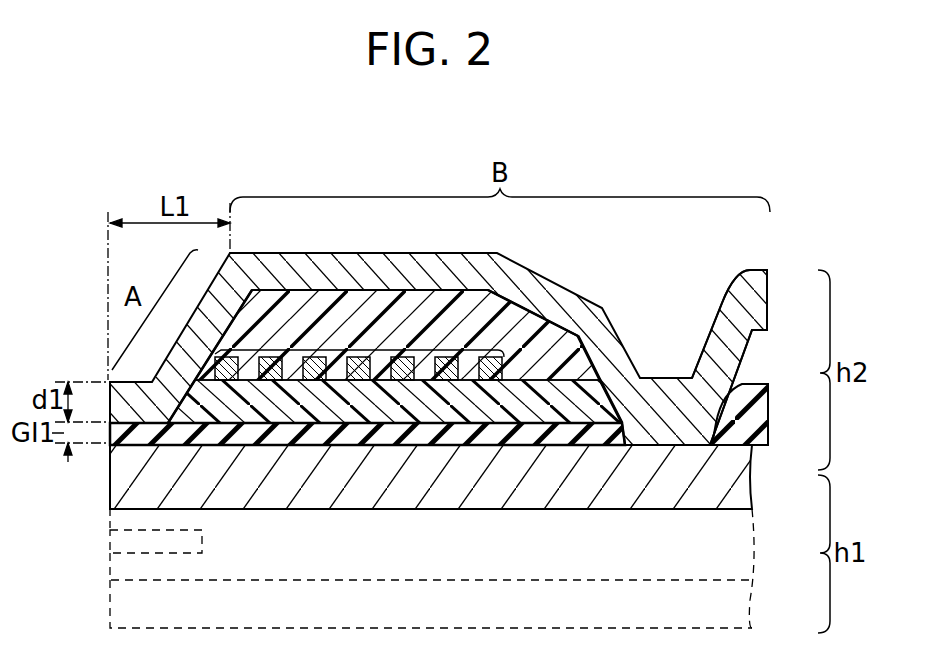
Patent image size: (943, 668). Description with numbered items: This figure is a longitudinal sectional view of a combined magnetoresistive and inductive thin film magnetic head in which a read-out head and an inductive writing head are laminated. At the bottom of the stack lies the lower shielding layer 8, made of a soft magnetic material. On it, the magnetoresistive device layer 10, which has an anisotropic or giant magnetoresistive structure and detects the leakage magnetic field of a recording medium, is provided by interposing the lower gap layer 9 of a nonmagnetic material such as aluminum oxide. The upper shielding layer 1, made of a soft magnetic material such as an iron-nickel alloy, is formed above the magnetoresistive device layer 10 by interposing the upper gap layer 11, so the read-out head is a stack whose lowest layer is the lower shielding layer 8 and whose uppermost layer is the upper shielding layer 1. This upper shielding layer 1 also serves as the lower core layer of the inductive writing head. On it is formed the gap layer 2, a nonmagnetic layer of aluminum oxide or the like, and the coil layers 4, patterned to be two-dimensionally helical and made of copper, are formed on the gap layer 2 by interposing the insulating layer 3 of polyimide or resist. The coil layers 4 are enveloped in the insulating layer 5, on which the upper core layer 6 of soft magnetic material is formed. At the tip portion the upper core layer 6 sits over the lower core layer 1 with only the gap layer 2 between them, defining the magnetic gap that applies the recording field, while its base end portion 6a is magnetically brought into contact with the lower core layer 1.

The upper shielding layer 1 is at (742, 490).
The gap layer 2 is at (142, 443).
The insulating layer 3 is at (562, 395).
The coil layers 4 is at (363, 350).
The insulating layer 5 is at (417, 318).
The upper core layer 6 is at (528, 287).
The base end portion 6a is at (667, 397).
The lower shielding layer 8 is at (110, 604).
The lower gap layer 9 is at (110, 572).
The magnetoresistive device layer 10 is at (110, 548).
The upper gap layer 11 is at (110, 518).